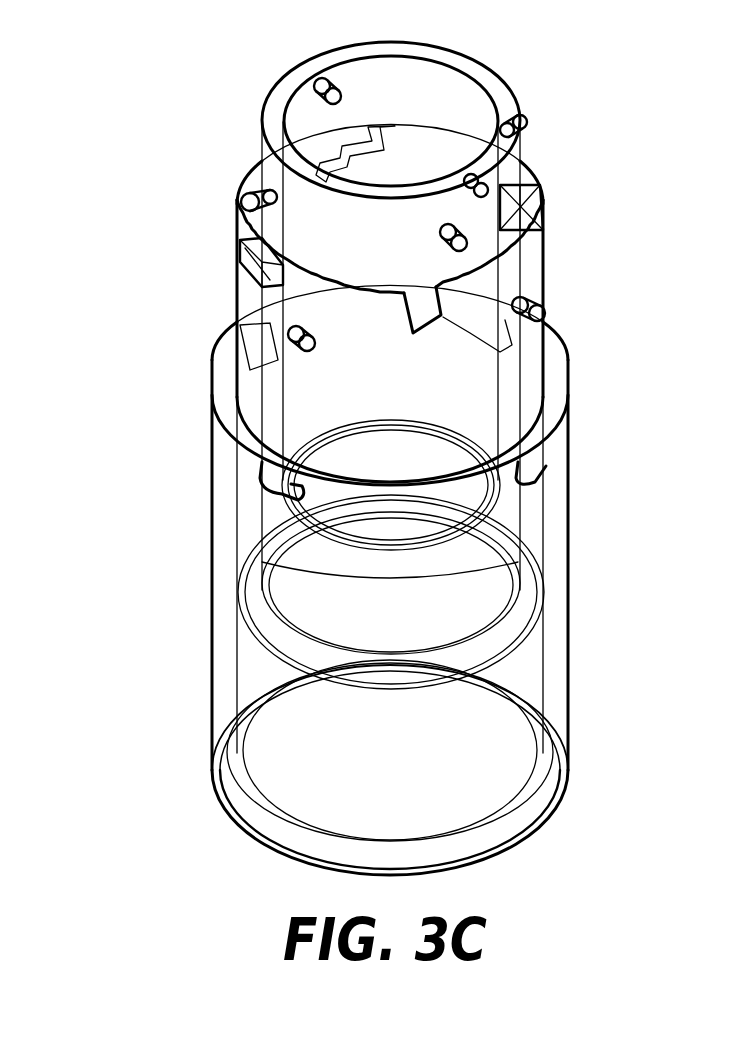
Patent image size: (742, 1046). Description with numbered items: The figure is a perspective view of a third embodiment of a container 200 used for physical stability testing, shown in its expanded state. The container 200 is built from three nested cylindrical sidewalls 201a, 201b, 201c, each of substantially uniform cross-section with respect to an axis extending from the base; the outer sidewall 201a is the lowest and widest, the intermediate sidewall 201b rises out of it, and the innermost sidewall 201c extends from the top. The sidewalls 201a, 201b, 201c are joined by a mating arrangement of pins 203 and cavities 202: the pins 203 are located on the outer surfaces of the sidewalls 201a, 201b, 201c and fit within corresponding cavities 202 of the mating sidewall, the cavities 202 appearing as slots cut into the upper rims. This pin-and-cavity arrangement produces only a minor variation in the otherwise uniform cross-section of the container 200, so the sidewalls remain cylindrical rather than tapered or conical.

The container 200 is at (585, 742).
The sidewall 201a is at (225, 512).
The sidewall 201b is at (247, 333).
The sidewall 201c is at (270, 164).
The cavity 202 is at (443, 318).
The pin 203 is at (530, 133).